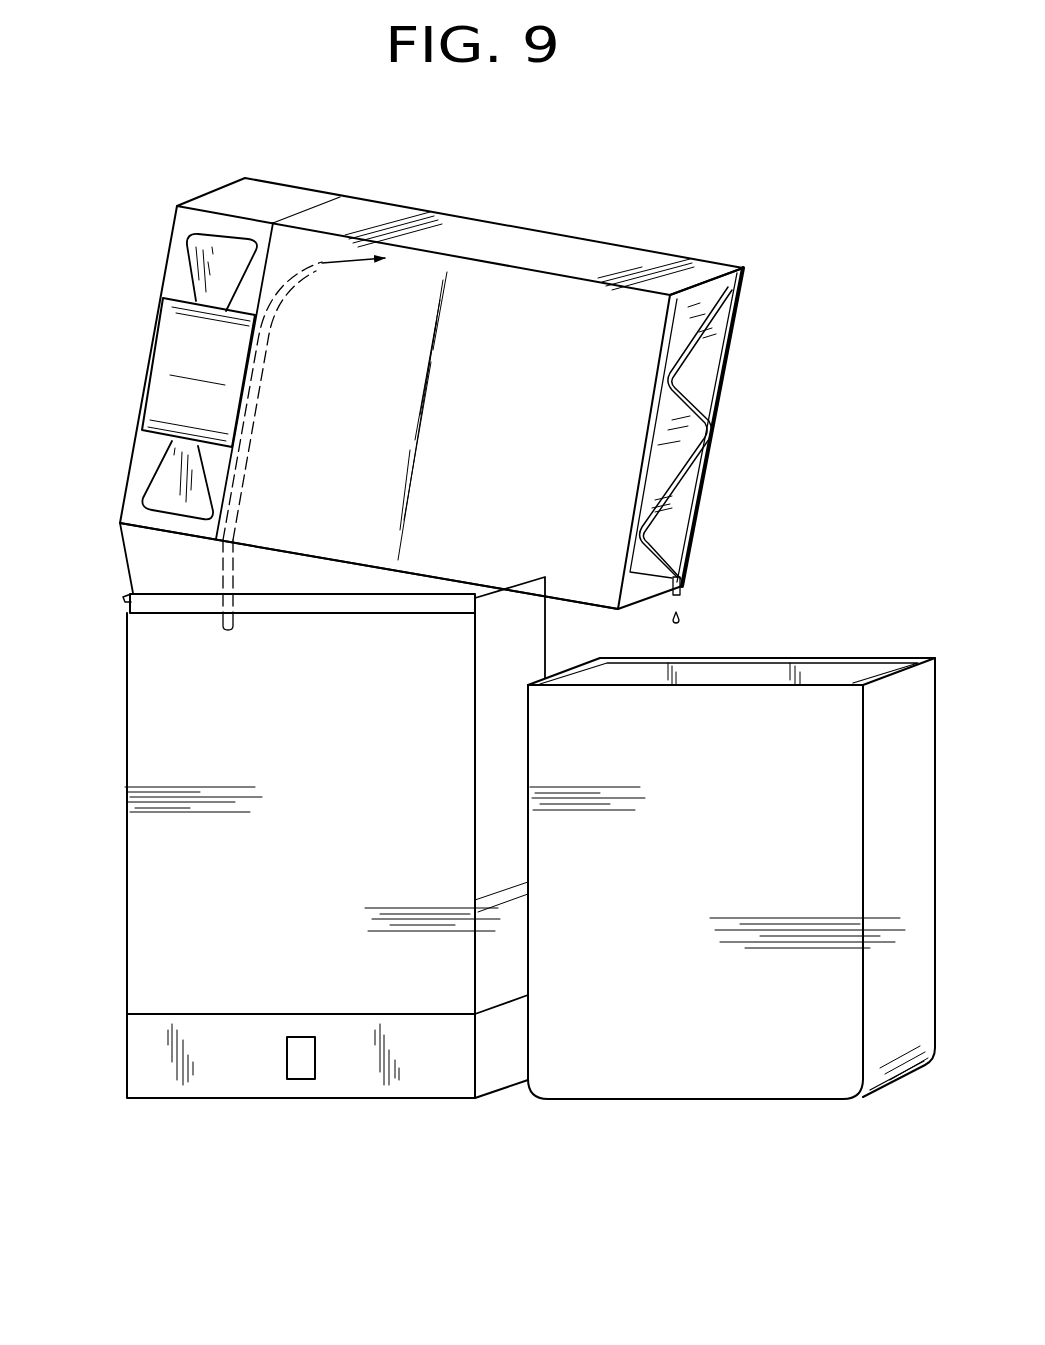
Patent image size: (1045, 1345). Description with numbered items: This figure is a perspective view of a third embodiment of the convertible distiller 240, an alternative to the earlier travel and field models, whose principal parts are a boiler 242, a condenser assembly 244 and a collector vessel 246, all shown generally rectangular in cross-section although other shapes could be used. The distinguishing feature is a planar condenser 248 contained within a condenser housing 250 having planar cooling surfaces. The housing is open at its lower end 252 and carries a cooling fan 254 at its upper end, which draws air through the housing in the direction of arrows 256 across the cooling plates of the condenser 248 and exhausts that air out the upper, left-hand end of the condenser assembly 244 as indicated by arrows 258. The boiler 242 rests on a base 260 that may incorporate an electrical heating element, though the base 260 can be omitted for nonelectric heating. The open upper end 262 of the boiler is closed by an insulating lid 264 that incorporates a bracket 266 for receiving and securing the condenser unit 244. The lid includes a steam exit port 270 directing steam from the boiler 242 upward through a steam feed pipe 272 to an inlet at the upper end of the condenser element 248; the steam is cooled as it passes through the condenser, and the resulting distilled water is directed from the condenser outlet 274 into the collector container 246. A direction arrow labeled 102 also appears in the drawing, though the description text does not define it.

The distiller 240 is at (797, 168).
The boiler 242 is at (135, 1106).
The condenser assembly 244 is at (489, 210).
The collector vessel 246 is at (867, 647).
The planar condenser 248 is at (720, 410).
The condenser housing 250 is at (588, 303).
The lower end 252 is at (742, 298).
The cooling fan 254 is at (182, 363).
The arrows 256 is at (690, 365).
The arrows 258 is at (157, 248).
The base 260 is at (233, 1083).
The open upper end 262 is at (128, 597).
The insulating lid 264 is at (317, 603).
The bracket 266 is at (185, 563).
The steam exit port 270 is at (222, 630).
The steam feed pipe 272 is at (265, 350).
The condenser outlet 274 is at (683, 600).
The pivot direction 102 is at (323, 250).